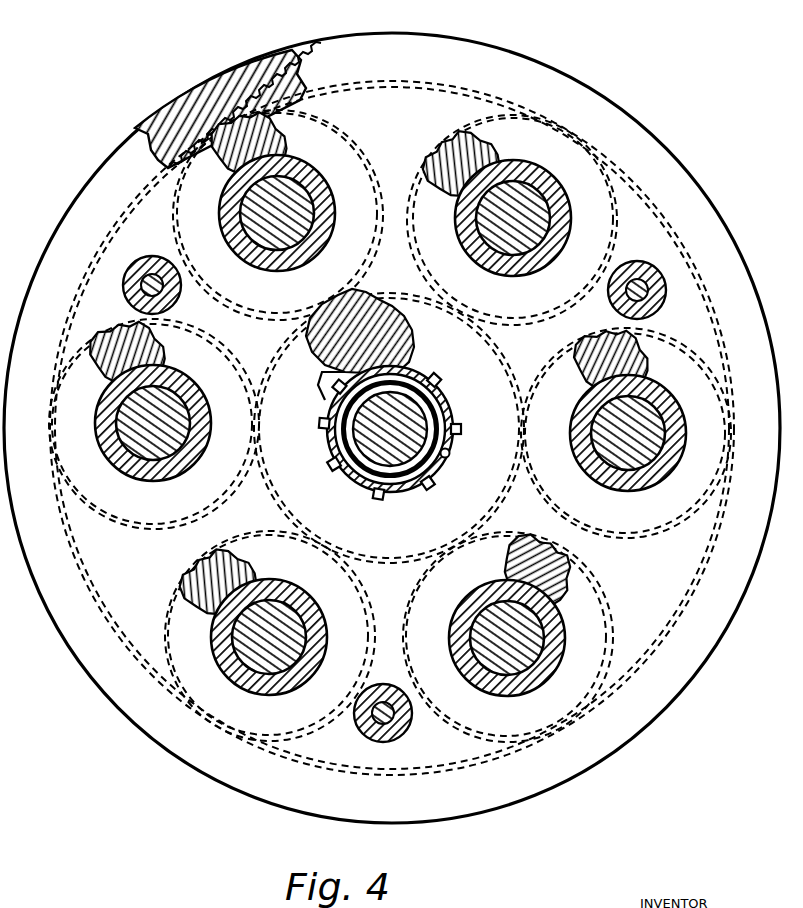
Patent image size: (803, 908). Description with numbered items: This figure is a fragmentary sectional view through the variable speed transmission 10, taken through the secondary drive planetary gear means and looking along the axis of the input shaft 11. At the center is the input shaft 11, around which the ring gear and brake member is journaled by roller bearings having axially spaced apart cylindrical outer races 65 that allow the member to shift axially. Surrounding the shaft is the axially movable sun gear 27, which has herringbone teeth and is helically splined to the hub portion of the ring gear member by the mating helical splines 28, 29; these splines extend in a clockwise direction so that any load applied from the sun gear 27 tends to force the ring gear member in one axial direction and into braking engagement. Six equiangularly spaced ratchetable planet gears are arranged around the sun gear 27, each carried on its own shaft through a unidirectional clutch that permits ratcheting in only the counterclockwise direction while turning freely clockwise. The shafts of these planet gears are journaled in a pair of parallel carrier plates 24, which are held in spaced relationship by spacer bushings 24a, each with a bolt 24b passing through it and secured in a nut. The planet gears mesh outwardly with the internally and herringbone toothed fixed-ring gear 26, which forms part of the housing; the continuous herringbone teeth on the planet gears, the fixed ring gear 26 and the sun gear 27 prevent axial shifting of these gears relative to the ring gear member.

The variable speed transmission 10 is at (574, 59).
The fixed-ring gear 26 is at (401, 64).
The carrier plates 24 is at (407, 135).
The sun gear 27 is at (284, 340).
The cylindrical outer races 65 is at (433, 401).
The helical spline 28 is at (464, 428).
The helical spline 29 is at (451, 455).
The input shaft 11 is at (399, 437).
The spacer bushing 24a is at (362, 736).
The bolt 24b is at (404, 736).